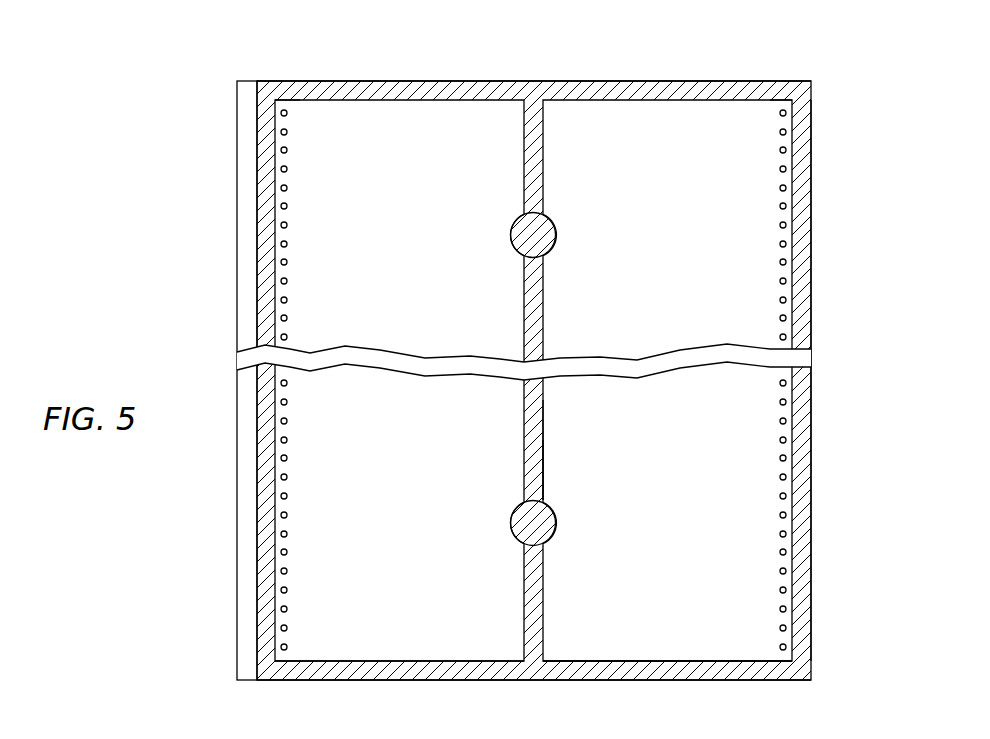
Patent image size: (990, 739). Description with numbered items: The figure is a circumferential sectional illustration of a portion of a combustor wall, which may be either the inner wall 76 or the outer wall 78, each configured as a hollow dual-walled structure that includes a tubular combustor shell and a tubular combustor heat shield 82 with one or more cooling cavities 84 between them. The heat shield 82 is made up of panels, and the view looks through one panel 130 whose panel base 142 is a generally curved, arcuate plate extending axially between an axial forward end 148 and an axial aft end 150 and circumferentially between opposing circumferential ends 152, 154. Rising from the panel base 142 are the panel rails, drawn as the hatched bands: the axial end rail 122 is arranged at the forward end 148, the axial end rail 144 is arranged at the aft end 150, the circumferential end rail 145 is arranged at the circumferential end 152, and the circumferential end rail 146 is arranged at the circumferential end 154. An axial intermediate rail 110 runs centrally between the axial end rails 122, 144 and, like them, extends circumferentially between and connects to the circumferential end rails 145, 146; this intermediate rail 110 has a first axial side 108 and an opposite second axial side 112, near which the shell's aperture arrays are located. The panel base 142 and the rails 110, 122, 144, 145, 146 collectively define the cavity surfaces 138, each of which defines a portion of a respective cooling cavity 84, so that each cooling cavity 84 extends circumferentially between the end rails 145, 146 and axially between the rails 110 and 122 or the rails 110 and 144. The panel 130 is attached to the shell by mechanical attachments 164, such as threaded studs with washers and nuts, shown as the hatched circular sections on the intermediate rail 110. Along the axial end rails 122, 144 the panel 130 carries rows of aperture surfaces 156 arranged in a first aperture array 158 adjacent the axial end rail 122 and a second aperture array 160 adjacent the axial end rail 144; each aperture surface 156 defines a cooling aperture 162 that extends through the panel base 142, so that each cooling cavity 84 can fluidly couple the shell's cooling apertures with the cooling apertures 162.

The inner wall 76 is at (561, 375).
The outer wall 78 is at (852, 105).
The combustor heat shield 82 is at (600, 380).
The panel 130 is at (813, 203).
The cooling cavity 84 is at (678, 503).
The first axial side 108 is at (524, 436).
The axial intermediate rail 110 is at (544, 467).
The second axial side 112 is at (544, 436).
The axial end rail 122 is at (263, 503).
The cavity surface 138 is at (457, 646).
The panel base 142 is at (728, 643).
The axial end rail 144 is at (805, 533).
The circumferential end rail 145 is at (367, 90).
The circumferential end rail 146 is at (347, 682).
The axial forward end 148 is at (237, 570).
The axial aft end 150 is at (812, 560).
The circumferential end 152 is at (318, 80).
The circumferential end 154 is at (316, 682).
The aperture surface 156 is at (533, 380).
The aperture array 158 is at (283, 99).
The aperture array 160 is at (783, 99).
The cooling aperture 162 is at (288, 206).
The mechanical attachment 164 is at (556, 222).